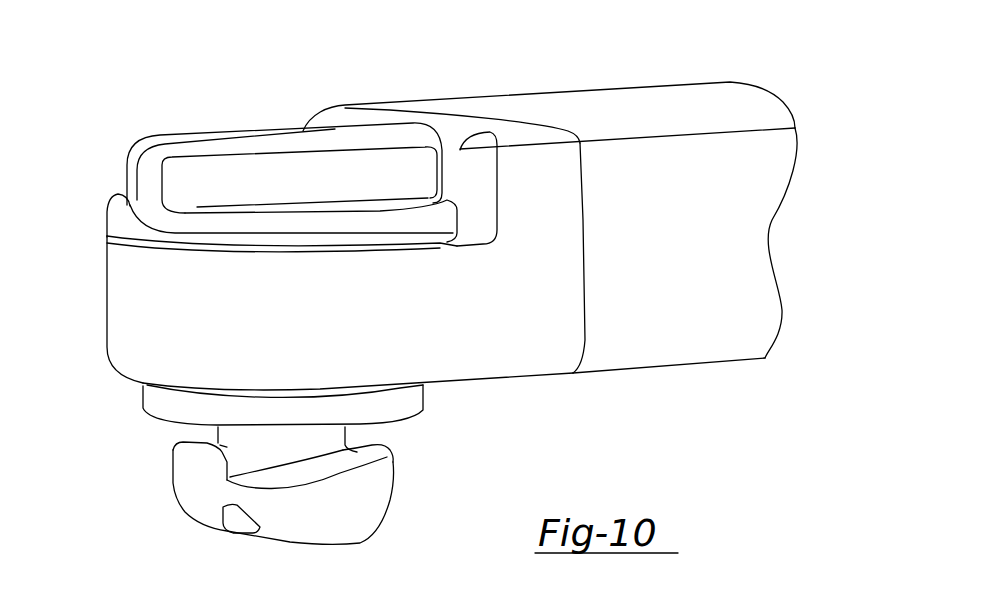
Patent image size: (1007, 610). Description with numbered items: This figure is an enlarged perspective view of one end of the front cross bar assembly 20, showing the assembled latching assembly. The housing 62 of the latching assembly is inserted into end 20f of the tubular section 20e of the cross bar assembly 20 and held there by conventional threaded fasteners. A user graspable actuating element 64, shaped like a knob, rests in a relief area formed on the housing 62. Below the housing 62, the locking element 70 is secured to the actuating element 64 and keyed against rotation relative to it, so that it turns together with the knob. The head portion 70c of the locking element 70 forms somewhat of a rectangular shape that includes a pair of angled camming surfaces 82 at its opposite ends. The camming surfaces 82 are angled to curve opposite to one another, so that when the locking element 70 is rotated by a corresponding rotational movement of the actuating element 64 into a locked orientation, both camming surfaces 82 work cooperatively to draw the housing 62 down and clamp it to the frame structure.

The cross bar assembly 20 is at (550, 221).
The end of the cross bar assembly 20f is at (534, 107).
The tubular section 20e is at (720, 337).
The housing 62 is at (140, 307).
The actuating element 64 is at (220, 187).
The locking element 70 is at (286, 505).
The head portion 70c is at (353, 518).
The camming surfaces 82 is at (207, 443).